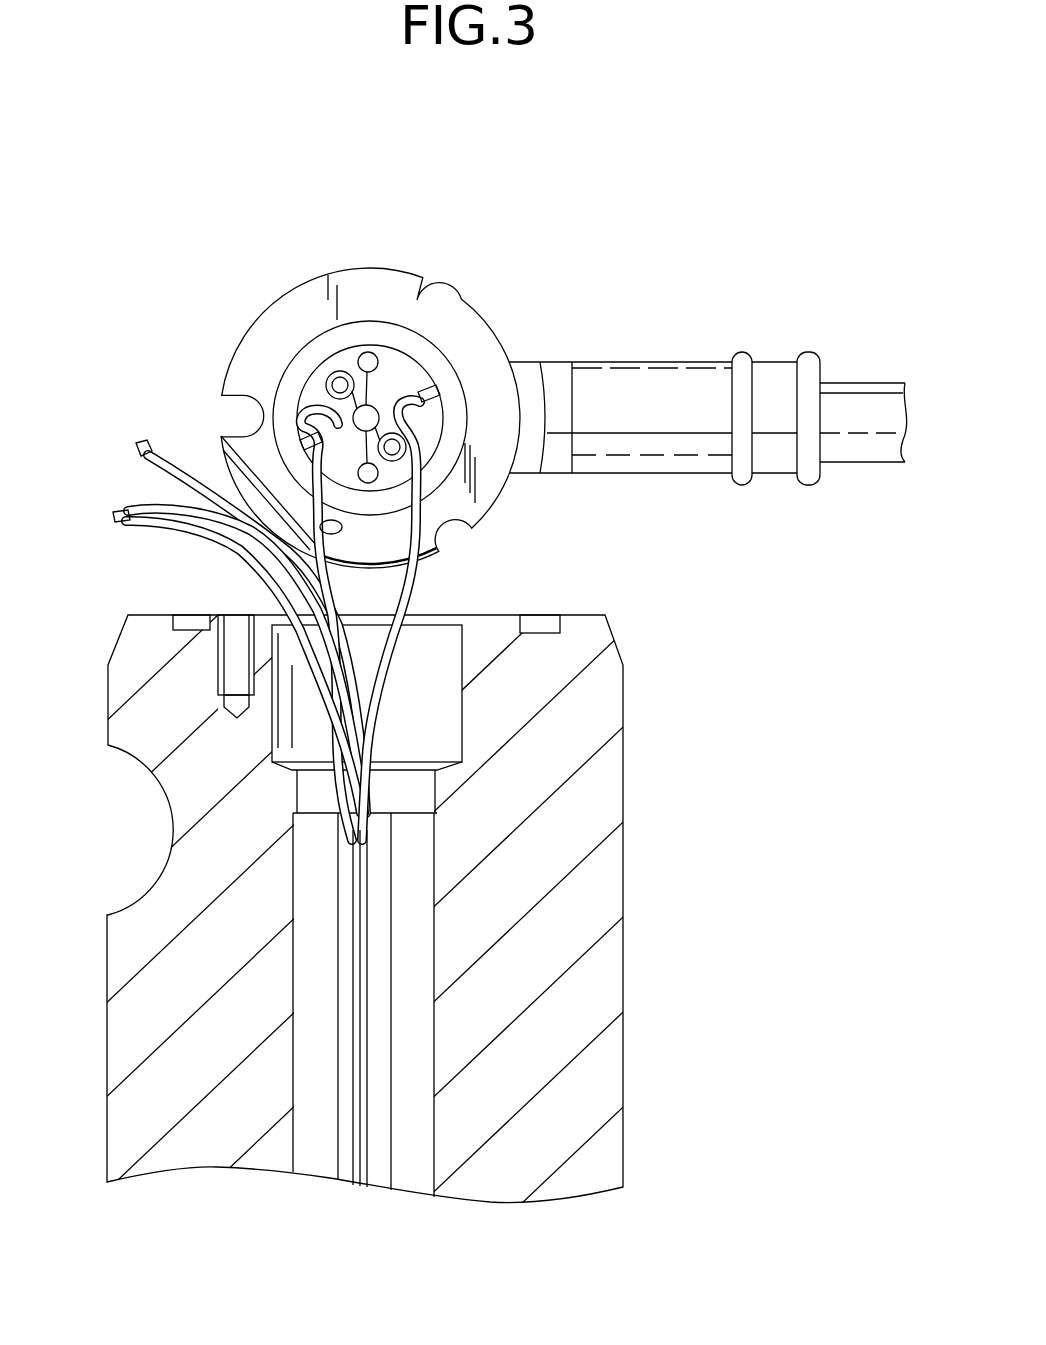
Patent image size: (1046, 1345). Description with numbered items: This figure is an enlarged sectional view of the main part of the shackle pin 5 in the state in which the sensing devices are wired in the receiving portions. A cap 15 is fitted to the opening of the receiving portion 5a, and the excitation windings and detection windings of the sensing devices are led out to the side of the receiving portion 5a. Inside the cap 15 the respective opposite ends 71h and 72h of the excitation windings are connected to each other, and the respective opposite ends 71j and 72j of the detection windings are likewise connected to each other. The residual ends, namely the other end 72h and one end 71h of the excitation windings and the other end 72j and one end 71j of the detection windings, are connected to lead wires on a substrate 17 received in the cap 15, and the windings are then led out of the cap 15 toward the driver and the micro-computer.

The shackle pin 5 is at (625, 1042).
The receiving portion 5a is at (431, 924).
The cap 15 is at (497, 325).
The substrate 17 is at (402, 338).
The one end of the excitation winding 71h is at (152, 480).
The one end of the detection winding 71j is at (183, 545).
The other end of the excitation winding 72h is at (305, 438).
The other end of the detection winding 72j is at (223, 450).